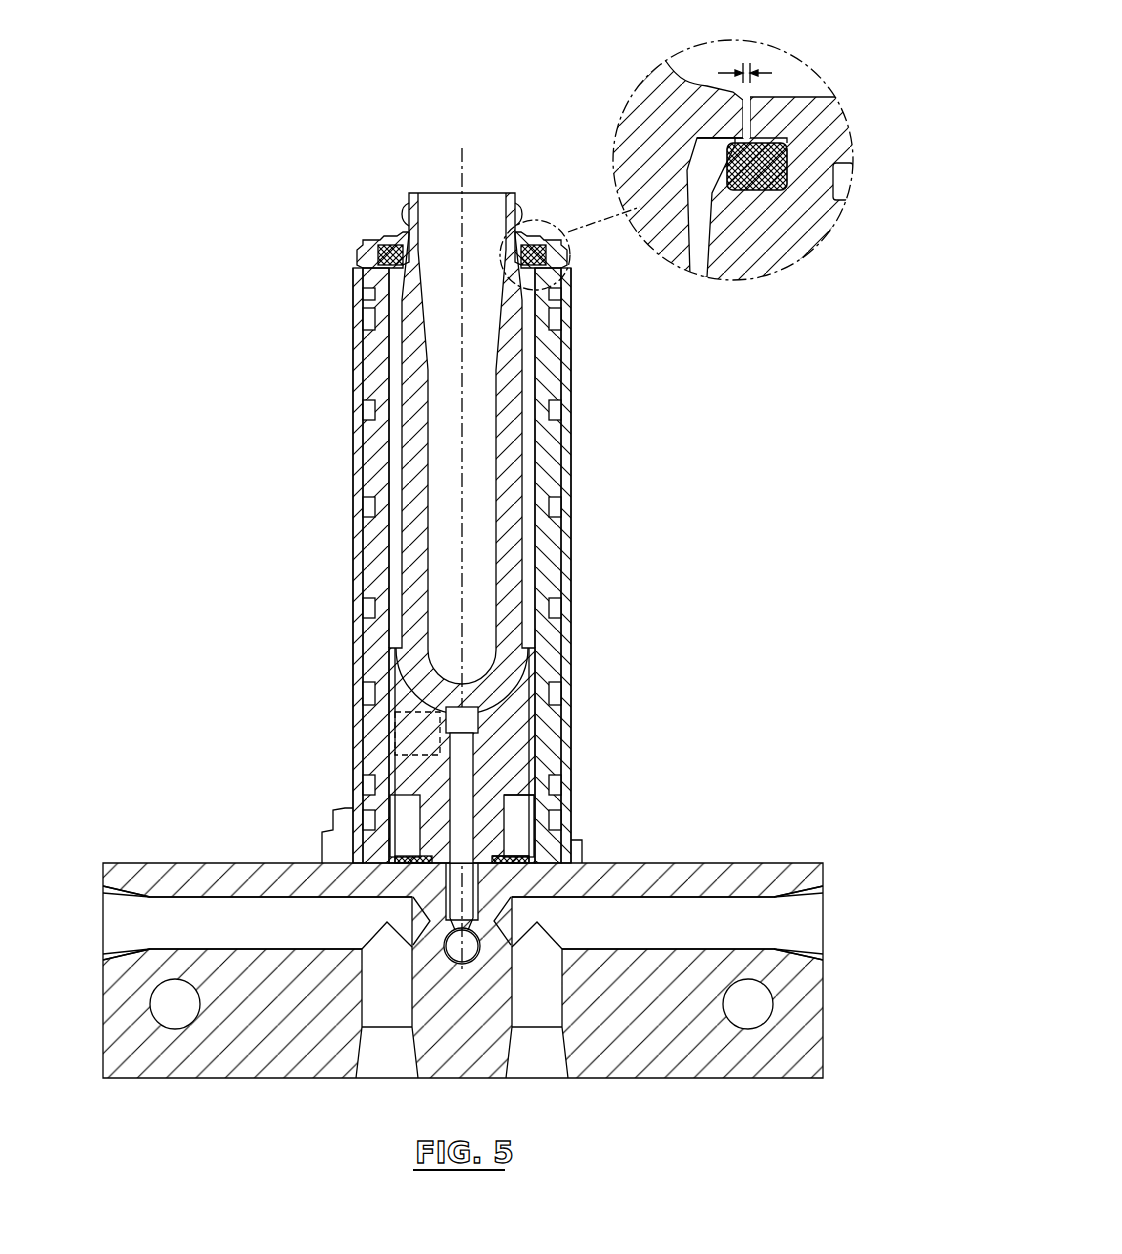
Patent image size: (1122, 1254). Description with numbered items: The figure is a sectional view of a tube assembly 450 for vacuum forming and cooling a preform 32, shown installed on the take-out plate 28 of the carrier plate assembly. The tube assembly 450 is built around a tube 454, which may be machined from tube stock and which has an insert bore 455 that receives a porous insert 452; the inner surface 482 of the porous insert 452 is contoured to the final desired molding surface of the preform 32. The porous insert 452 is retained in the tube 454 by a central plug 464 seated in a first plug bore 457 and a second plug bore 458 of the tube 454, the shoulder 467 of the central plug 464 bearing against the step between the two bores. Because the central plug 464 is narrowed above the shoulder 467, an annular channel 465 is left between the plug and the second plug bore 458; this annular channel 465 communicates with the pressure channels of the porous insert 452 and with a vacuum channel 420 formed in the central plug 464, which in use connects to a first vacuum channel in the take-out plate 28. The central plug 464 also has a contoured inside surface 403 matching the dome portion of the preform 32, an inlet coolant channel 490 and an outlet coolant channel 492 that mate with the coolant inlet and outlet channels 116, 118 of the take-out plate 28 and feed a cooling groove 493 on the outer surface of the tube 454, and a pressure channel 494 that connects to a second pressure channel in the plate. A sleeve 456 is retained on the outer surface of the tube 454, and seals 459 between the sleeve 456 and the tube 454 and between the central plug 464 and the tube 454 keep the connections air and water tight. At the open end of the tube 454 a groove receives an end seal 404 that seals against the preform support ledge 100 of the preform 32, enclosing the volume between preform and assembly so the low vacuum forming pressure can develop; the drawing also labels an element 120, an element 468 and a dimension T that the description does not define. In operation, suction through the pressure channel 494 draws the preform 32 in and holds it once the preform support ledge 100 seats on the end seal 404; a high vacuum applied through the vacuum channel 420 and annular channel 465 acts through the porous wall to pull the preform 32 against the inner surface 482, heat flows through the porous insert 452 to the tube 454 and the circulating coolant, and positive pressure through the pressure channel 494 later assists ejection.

The take-out plate 28 is at (783, 1078).
The preform 32 is at (481, 200).
The preform support ledge 100 is at (712, 127).
The coolant inlet channel 116 is at (178, 912).
The coolant outlet channel 118 is at (745, 910).
The valve stem tip 120 is at (470, 893).
The contoured inside surface 403 is at (540, 700).
The end seal 404 is at (800, 185).
The vacuum channel 420 is at (395, 712).
The tube assembly 450 is at (688, 583).
The porous insert 452 is at (548, 445).
The tube 454 is at (568, 483).
The insert bore 455 is at (353, 320).
The sleeve 456 is at (572, 363).
The first plug bore 457 is at (380, 758).
The second plug bore 458 is at (380, 637).
The seals 459 is at (363, 293).
The central plug 464 is at (560, 712).
The annular channel 465 is at (540, 663).
The shoulder 467 is at (385, 783).
The flange 468 is at (330, 845).
The inner surface 482 is at (525, 572).
The inlet coolant channel 490 is at (400, 800).
The outlet coolant channel 492 is at (520, 850).
The cooling groove 493 is at (562, 403).
The pressure channel 494 is at (525, 740).
The gap thickness T is at (755, 75).